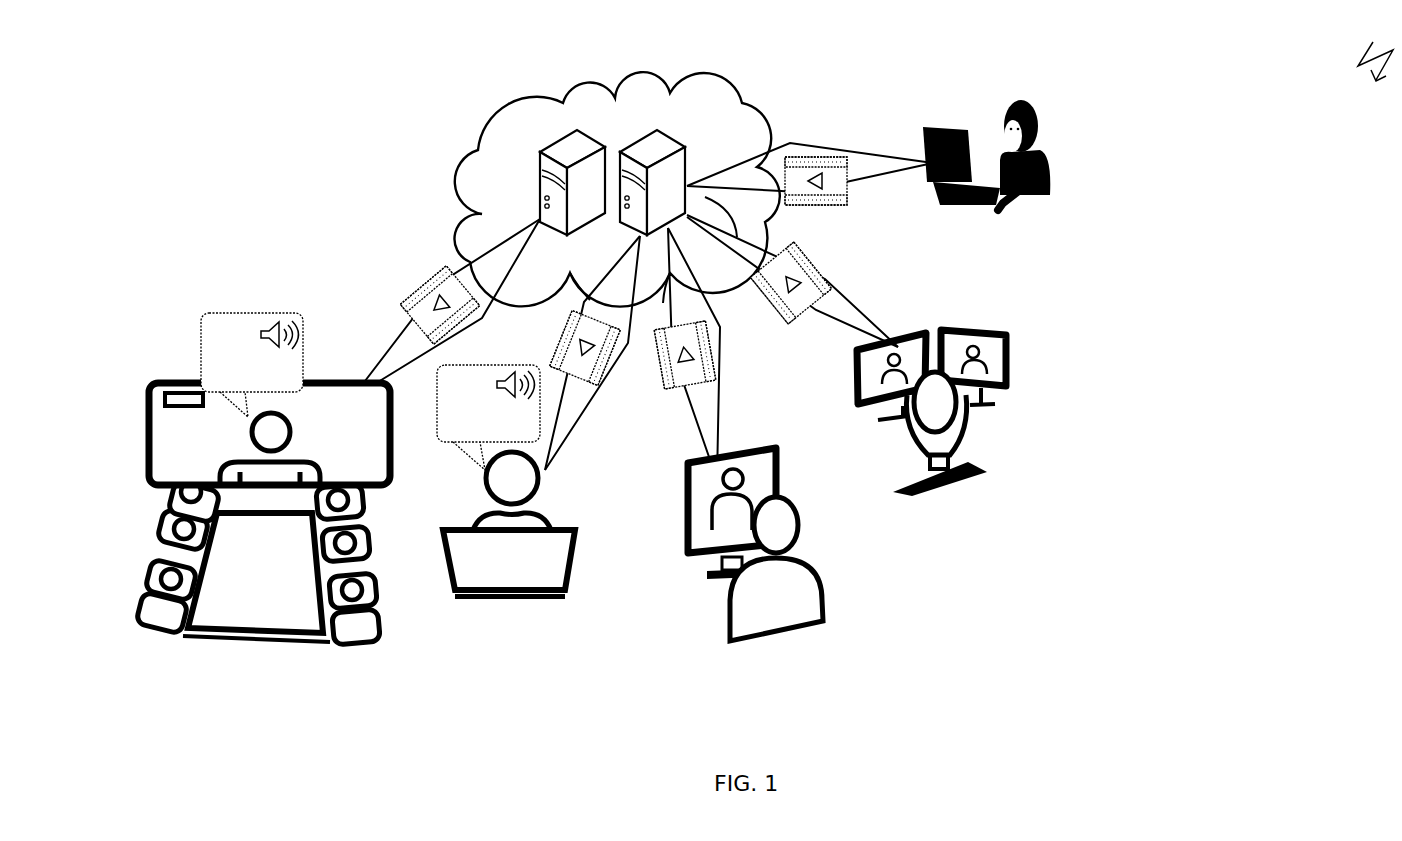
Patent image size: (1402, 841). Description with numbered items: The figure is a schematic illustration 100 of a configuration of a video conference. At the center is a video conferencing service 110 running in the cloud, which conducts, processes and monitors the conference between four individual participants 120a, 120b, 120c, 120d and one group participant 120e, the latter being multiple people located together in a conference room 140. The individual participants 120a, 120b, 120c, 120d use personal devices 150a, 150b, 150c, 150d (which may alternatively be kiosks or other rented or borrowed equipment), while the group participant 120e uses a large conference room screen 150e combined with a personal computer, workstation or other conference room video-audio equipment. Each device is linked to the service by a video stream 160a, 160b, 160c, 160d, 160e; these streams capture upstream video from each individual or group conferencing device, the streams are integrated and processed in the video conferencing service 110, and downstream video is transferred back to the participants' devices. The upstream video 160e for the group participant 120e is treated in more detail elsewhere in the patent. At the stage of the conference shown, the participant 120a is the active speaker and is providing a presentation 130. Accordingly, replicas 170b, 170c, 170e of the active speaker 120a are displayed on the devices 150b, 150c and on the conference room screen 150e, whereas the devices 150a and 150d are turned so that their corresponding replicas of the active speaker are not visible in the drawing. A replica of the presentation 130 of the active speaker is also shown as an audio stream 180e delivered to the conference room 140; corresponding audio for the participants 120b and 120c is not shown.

The schematic illustration 100 is at (1375, 51).
The video conferencing service 110 is at (546, 143).
The individual participant 120a is at (533, 494).
The individual participant 120b is at (825, 578).
The individual participant 120c is at (966, 428).
The individual participant 120d is at (1050, 182).
The group participant 120e is at (147, 564).
The presentation 130 is at (453, 451).
The conference room 140 is at (268, 572).
The personal device 150a is at (515, 601).
The personal device 150b is at (703, 562).
The personal device 150c is at (1010, 371).
The personal device 150d is at (947, 127).
The conference room screen 150e is at (148, 408).
The video stream 160a is at (598, 394).
The video stream 160b is at (721, 362).
The video stream 160c is at (845, 293).
The video stream 160d is at (803, 140).
The upstream video 160e is at (440, 272).
The replica of the active speaker 170b is at (742, 480).
The replica of the active speaker 170c is at (980, 350).
The replica of the active speaker 170e is at (294, 417).
The audio stream 180e is at (236, 314).